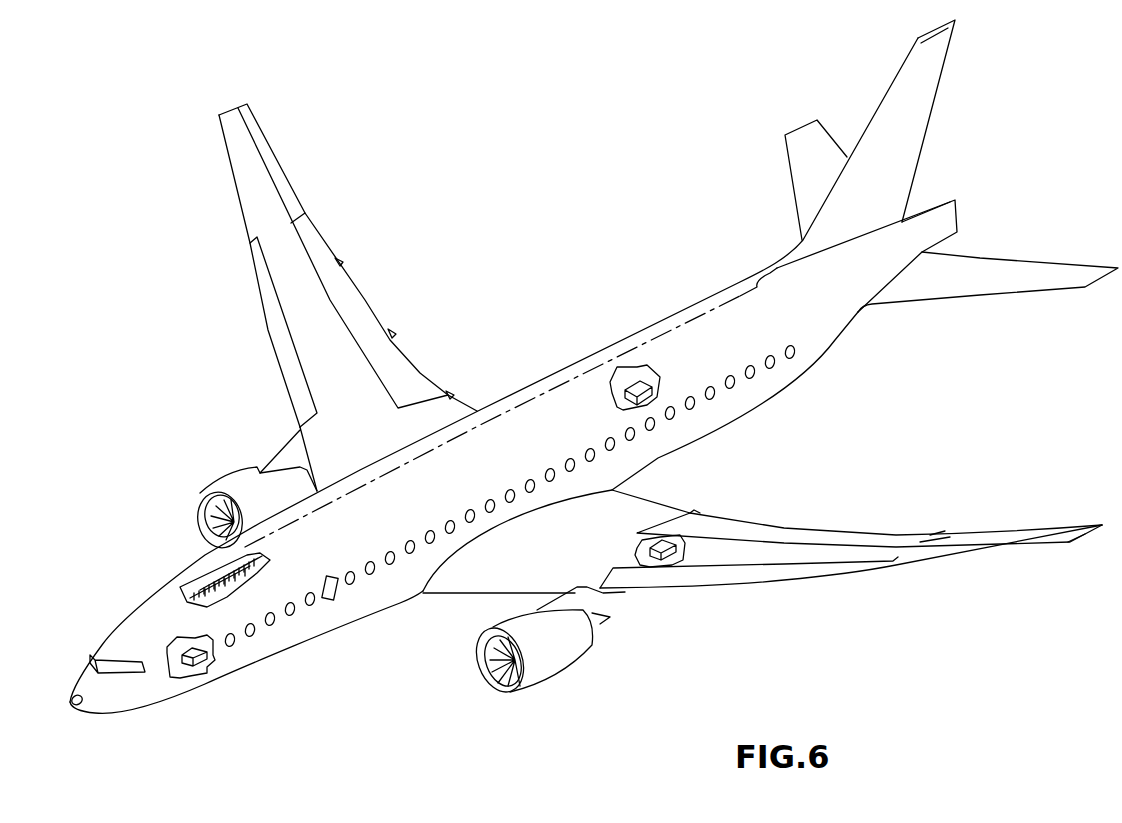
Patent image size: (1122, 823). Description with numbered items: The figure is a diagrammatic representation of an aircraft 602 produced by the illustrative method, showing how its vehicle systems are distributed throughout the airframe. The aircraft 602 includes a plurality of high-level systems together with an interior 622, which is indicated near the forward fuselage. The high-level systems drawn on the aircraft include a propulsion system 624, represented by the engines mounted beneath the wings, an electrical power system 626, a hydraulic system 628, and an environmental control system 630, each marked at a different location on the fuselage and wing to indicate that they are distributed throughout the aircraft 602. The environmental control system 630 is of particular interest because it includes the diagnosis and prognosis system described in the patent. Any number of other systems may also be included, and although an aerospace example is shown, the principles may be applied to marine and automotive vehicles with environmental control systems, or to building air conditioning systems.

The aircraft 602 is at (594, 366).
The interior 622 is at (228, 598).
The propulsion system 624 is at (240, 482).
The electrical power system 626 is at (187, 650).
The hydraulic system 628 is at (665, 537).
The environmental control system 630 is at (628, 388).